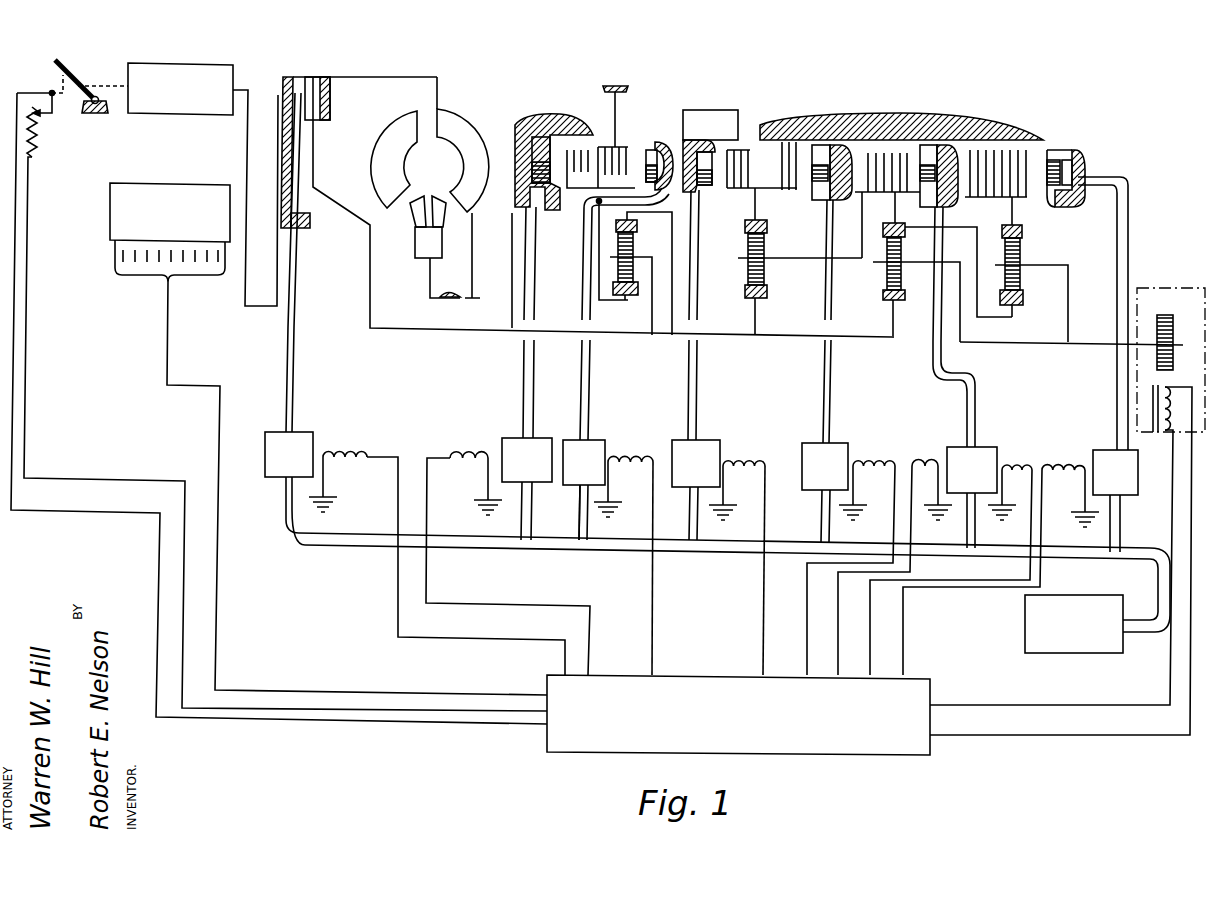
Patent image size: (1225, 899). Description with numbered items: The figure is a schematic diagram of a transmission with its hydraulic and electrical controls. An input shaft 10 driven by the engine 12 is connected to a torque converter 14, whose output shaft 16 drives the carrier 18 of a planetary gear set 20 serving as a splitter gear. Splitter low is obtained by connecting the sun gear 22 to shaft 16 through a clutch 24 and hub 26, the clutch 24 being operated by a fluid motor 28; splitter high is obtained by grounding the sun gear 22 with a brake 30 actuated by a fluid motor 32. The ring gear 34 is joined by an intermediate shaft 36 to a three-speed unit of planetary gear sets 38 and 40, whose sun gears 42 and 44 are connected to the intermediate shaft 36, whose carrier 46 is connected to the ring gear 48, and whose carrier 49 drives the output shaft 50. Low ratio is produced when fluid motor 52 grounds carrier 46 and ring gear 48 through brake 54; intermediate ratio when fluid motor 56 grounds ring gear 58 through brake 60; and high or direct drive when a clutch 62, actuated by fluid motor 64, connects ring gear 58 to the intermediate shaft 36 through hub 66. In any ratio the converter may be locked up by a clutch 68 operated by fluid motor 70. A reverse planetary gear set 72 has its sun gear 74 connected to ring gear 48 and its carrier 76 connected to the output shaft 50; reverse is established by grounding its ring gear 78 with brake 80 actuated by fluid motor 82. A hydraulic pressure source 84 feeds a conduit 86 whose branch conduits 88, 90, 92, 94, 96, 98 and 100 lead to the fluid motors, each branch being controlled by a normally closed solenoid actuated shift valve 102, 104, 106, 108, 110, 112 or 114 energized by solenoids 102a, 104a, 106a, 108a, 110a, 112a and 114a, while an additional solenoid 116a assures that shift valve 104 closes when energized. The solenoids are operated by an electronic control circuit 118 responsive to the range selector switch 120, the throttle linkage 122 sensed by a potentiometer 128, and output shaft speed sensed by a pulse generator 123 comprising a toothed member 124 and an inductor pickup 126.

The input shaft 10 is at (270, 310).
The engine 12 is at (222, 113).
The torque converter 14 is at (480, 120).
The torque converter output shaft 16 is at (470, 333).
The carrier 18 is at (648, 258).
The planetary gear set 20 is at (636, 304).
The sun gear 22 is at (628, 300).
The clutch 24 is at (576, 148).
The hub 26 is at (515, 228).
The fluid motor 28 is at (538, 132).
The brake 30 is at (615, 126).
The fluid motor 32 is at (652, 145).
The ring gear 34 is at (599, 230).
The intermediate shaft 36 is at (812, 337).
The planetary gear set 38 is at (768, 250).
The planetary gear set 40 is at (901, 276).
The sun gear 42 is at (758, 296).
The sun gear 44 is at (895, 302).
The carrier 46 is at (750, 264).
The ring gear 48 is at (897, 223).
The carrier 49 is at (878, 263).
The output shaft 50 is at (1085, 342).
The fluid motor 52 is at (930, 150).
The brake 54 is at (880, 150).
The fluid motor 56 is at (820, 150).
The ring gear 58 is at (760, 222).
The brake 60 is at (790, 145).
The clutch 62 is at (750, 148).
The fluid motor 64 is at (715, 112).
The hub 66 is at (699, 242).
The clutch 68 is at (328, 112).
The fluid motor 70 is at (303, 156).
The reverse planetary gear set 72 is at (1024, 262).
The sun gear 74 is at (1014, 302).
The carrier 76 is at (1050, 265).
The ring gear 78 is at (1018, 226).
The brake 80 is at (1012, 160).
The fluid motor 82 is at (1058, 150).
The hydraulic pressure source 84 is at (1025, 606).
The conduit 86 is at (1148, 560).
The branch conduit 88 is at (1117, 358).
The branch conduit 90 is at (948, 366).
The fluid conduit 92 is at (830, 378).
The branch conduit 94 is at (700, 401).
The branch conduit 96 is at (588, 406).
The branch conduit 98 is at (536, 376).
The branch conduit 100 is at (297, 366).
The shift valve 102 is at (1108, 450).
The solenoid 102a is at (1080, 468).
The shift valve 104 is at (985, 447).
The solenoid 104a is at (925, 462).
The shift valve 106 is at (833, 452).
The solenoid 106a is at (866, 468).
The shift valve 108 is at (700, 442).
The solenoid 108a is at (750, 462).
The shift valve 110 is at (596, 446).
The solenoid 110a is at (642, 458).
The shift valve 112 is at (515, 438).
The solenoid 112a is at (472, 452).
The shift valve 114 is at (300, 432).
The solenoid 114a is at (345, 450).
The solenoid 116a is at (1010, 465).
The electronic control circuit 118 is at (722, 678).
The range selector switch 120 is at (110, 230).
The throttle linkage 122 is at (85, 92).
The pulse generator 123 is at (1140, 292).
The toothed member 124 is at (1165, 315).
The inductor pickup 126 is at (1165, 440).
The potentiometer 128 is at (42, 140).